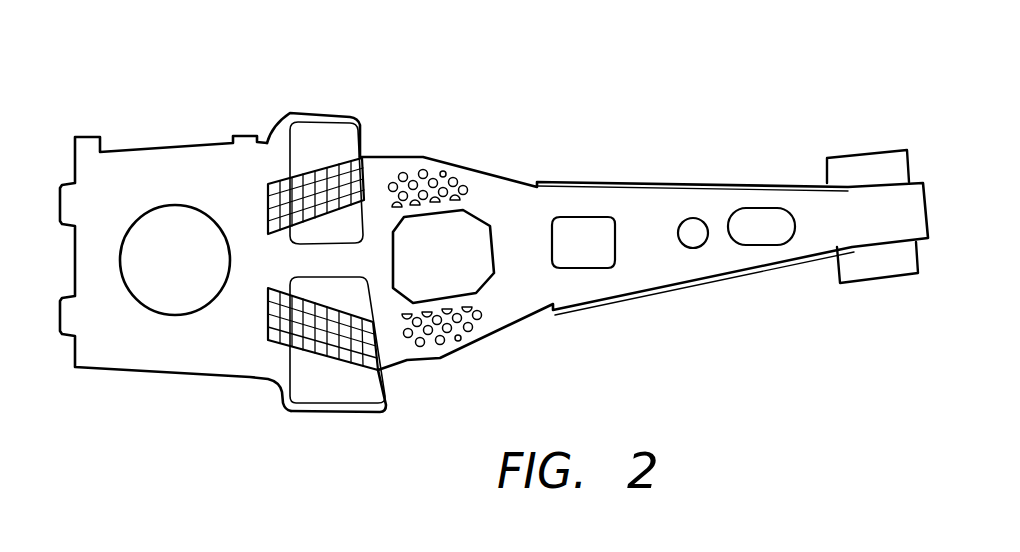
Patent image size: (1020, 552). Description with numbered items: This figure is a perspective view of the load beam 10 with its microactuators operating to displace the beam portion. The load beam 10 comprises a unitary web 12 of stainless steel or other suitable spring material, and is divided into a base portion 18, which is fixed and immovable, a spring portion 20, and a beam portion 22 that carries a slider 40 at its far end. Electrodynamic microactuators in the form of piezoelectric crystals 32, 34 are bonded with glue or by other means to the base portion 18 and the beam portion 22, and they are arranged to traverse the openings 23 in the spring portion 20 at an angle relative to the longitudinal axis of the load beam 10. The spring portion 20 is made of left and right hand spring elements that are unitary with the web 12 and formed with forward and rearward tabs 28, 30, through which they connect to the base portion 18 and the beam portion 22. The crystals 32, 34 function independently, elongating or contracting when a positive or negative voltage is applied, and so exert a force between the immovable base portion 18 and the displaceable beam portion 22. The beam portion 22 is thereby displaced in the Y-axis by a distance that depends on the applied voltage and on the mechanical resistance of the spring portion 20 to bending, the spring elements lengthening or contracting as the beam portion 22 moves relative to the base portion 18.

The load beam 10 is at (690, 399).
The unitary web 12 is at (505, 330).
The base portion 18 is at (125, 147).
The spring portion 20 is at (360, 137).
The beam portion 22 is at (600, 182).
The openings 23 is at (342, 225).
The forward tabs 28 is at (341, 124).
The rearward tabs 30 is at (287, 117).
The piezoelectric crystal 32 is at (360, 352).
The piezoelectric crystal 34 is at (323, 188).
The slider 40 is at (873, 168).